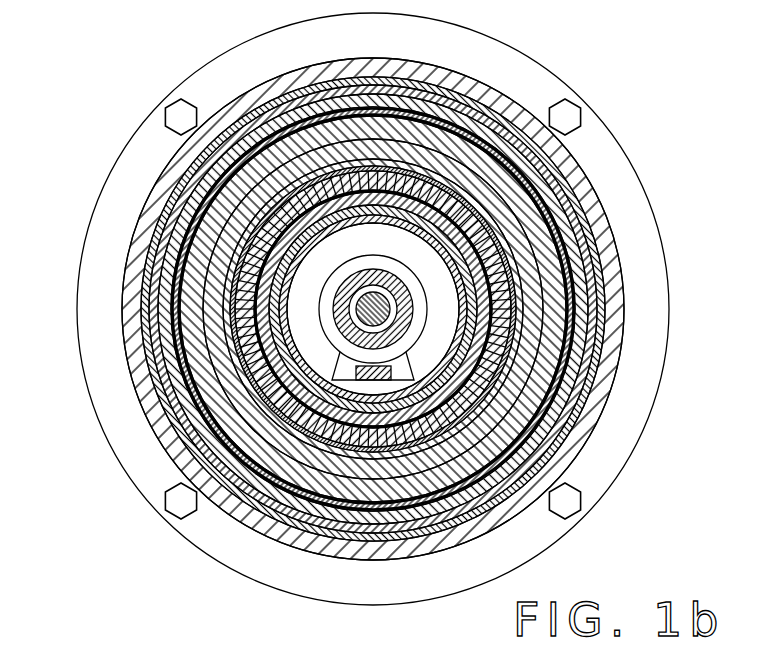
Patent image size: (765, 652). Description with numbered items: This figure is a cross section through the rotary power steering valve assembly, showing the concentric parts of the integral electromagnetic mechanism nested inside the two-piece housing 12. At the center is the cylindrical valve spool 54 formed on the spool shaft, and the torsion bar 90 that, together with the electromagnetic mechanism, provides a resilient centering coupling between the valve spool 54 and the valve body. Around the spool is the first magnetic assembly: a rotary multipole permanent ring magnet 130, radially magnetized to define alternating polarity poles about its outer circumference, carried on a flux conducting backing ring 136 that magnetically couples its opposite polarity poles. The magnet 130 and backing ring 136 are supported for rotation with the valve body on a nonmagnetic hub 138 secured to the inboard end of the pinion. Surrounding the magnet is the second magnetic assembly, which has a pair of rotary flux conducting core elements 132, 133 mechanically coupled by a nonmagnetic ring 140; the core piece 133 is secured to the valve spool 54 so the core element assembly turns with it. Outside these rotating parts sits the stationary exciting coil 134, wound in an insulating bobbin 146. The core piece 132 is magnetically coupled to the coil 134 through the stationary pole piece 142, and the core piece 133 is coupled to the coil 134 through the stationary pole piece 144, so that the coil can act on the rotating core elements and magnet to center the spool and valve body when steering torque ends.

The housing 12 is at (245, 97).
The valve spool 54 is at (398, 338).
The torsion bar 90 is at (390, 300).
The permanent ring magnet 130 is at (266, 268).
The flux conducting core element 132 is at (498, 259).
The flux conducting core element 133 is at (480, 390).
The exciting coil 134 is at (187, 235).
The flux conducting backing ring 136 is at (345, 222).
The nonmagnetic hub 138 is at (290, 318).
The nonmagnetic ring 140 is at (380, 163).
The stationary pole piece 142 is at (182, 190).
The stationary pole piece 144 is at (192, 162).
The insulating bobbin 146 is at (337, 160).